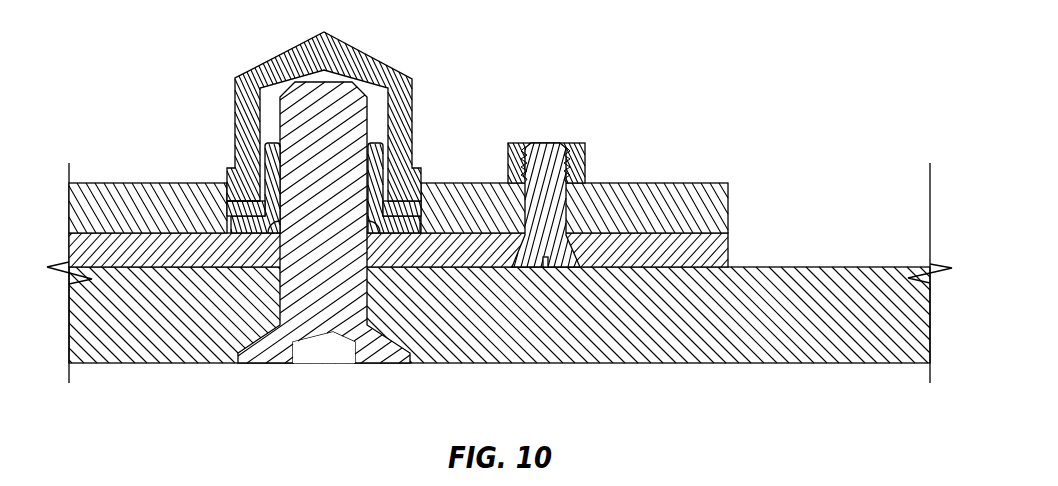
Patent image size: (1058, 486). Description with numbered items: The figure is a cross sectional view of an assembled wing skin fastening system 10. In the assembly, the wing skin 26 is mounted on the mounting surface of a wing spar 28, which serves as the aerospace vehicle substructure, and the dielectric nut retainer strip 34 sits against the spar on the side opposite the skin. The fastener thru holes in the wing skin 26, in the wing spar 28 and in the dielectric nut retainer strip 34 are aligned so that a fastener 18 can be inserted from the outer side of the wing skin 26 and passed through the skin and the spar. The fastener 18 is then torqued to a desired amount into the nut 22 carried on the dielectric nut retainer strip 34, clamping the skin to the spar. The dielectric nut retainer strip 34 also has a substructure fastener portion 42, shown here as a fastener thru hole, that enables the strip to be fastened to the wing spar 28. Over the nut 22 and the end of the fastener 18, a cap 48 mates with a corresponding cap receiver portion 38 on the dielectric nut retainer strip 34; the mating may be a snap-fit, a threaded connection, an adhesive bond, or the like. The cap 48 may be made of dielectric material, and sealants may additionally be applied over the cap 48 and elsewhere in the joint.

The wing skin fastening system 10 is at (142, 64).
The fastener 18 is at (334, 322).
The nut 22 is at (246, 208).
The wing skin 26 is at (165, 338).
The wing spar 28 is at (728, 252).
The dielectric nut retainer strip 34 is at (728, 212).
The cap receiver portion 38 is at (252, 194).
The substructure fastener portion 42 is at (571, 132).
The cap 48 is at (357, 48).